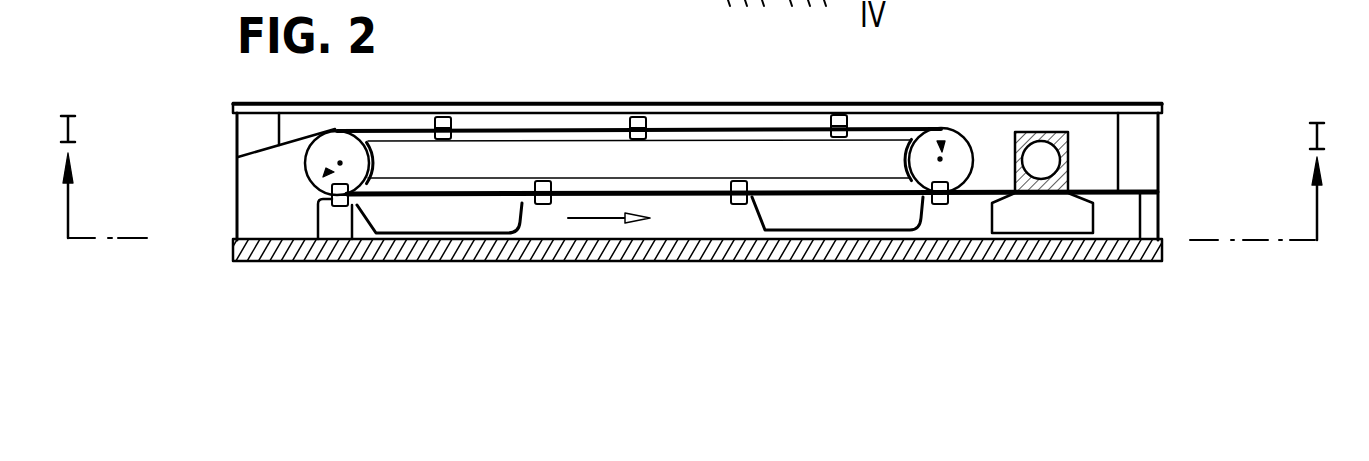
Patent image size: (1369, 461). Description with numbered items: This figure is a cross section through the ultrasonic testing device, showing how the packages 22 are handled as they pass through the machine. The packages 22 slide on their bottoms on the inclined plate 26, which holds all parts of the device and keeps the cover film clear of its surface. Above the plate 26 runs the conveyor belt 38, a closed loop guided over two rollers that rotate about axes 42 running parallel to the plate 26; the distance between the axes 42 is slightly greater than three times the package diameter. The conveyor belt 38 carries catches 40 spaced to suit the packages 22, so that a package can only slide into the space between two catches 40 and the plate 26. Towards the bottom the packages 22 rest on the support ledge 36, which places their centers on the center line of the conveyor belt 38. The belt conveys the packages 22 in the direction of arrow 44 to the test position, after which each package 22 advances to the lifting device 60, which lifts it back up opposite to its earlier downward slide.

The package 22 is at (468, 208).
The plate 26 is at (235, 261).
The support ledge 36 is at (710, 218).
The conveyor belt 38 is at (581, 128).
The catches 40 is at (827, 127).
The axes 42 is at (310, 175).
The arrow 44 is at (598, 222).
The lifting device 60 is at (1077, 216).